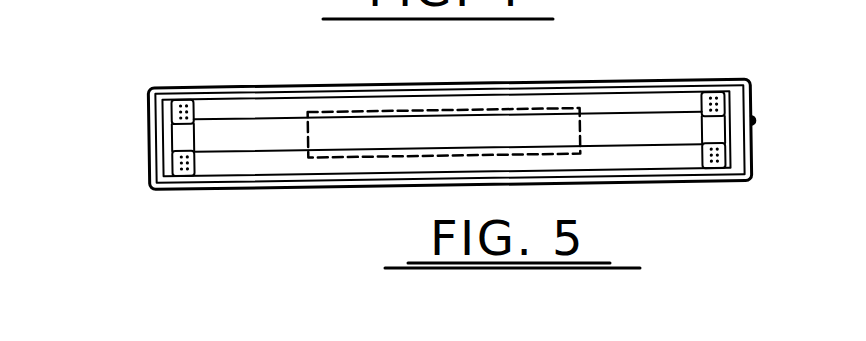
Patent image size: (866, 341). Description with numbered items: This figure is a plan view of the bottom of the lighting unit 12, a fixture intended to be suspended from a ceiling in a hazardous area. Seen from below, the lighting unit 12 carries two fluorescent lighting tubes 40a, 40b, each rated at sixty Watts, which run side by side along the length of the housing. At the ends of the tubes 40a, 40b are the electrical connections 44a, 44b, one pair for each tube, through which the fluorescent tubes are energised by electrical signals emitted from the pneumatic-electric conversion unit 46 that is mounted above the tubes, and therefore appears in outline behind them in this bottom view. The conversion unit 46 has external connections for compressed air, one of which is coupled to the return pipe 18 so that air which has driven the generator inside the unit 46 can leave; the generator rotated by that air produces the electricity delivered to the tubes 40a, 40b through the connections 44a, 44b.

The lighting unit 12 is at (570, 77).
The return pipe 18 is at (757, 127).
The fluorescent lighting tube 40a is at (344, 160).
The fluorescent lighting tube 40b is at (374, 106).
The electrical connection 44a is at (176, 174).
The electrical connection 44b is at (781, 49).
The pneumatic-electric conversion unit 46 is at (485, 107).